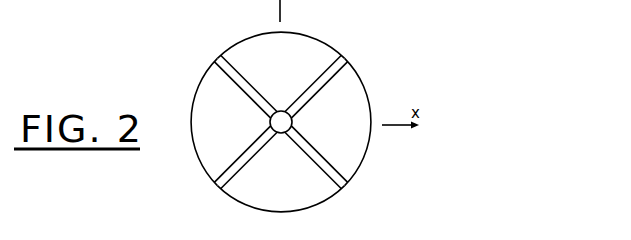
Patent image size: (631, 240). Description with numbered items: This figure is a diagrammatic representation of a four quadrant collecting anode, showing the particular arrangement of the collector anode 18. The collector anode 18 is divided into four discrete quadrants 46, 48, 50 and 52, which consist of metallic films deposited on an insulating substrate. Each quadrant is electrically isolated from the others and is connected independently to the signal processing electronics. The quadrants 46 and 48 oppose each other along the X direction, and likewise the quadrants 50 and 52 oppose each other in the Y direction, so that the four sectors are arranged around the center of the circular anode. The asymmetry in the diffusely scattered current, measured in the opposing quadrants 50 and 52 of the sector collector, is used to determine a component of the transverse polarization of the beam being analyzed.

The collector anode 18 is at (220, 56).
The quadrant 46 is at (213, 121).
The quadrant 48 is at (344, 121).
The quadrant 50 is at (280, 179).
The quadrant 52 is at (280, 62).